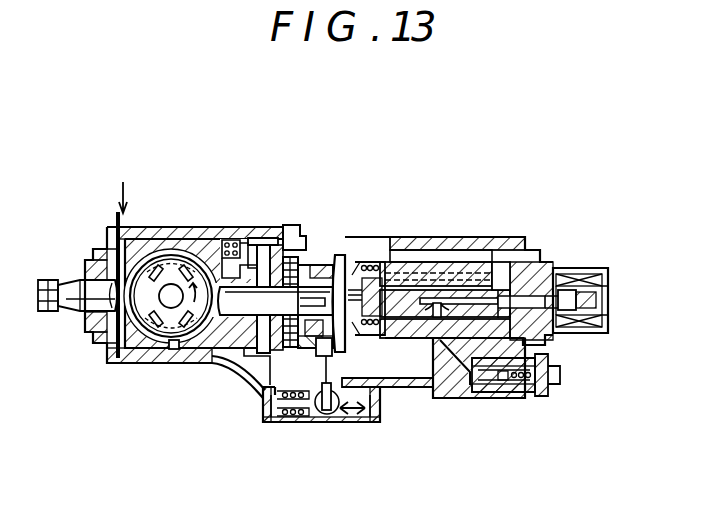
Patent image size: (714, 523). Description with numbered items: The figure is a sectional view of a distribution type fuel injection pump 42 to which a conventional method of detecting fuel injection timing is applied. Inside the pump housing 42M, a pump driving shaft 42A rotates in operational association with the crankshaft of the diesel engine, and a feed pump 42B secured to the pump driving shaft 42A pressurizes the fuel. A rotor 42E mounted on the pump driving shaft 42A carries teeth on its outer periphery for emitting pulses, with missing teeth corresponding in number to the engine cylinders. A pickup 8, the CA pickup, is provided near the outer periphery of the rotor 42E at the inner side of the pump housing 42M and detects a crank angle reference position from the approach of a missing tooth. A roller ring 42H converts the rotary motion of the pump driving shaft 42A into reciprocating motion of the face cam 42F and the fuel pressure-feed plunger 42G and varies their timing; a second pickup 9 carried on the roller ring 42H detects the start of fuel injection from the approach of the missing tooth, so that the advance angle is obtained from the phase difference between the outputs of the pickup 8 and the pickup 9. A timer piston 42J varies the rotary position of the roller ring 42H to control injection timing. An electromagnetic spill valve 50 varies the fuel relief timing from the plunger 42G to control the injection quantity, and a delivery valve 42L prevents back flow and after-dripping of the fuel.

The injection pump 42 is at (407, 182).
The pump driving shaft 42A is at (98, 300).
The feed pump 42B is at (176, 325).
The pickup 9 is at (262, 360).
The rotor 42E is at (262, 262).
The pickup 8 is at (292, 236).
The roller ring 42H is at (285, 292).
The face cam 42F is at (340, 282).
The plunger 42G is at (378, 300).
The pump housing 42M is at (425, 244).
The electromagnetic spill valve 50 is at (578, 262).
The timer piston 42J is at (316, 425).
The delivery valve 42L is at (540, 395).